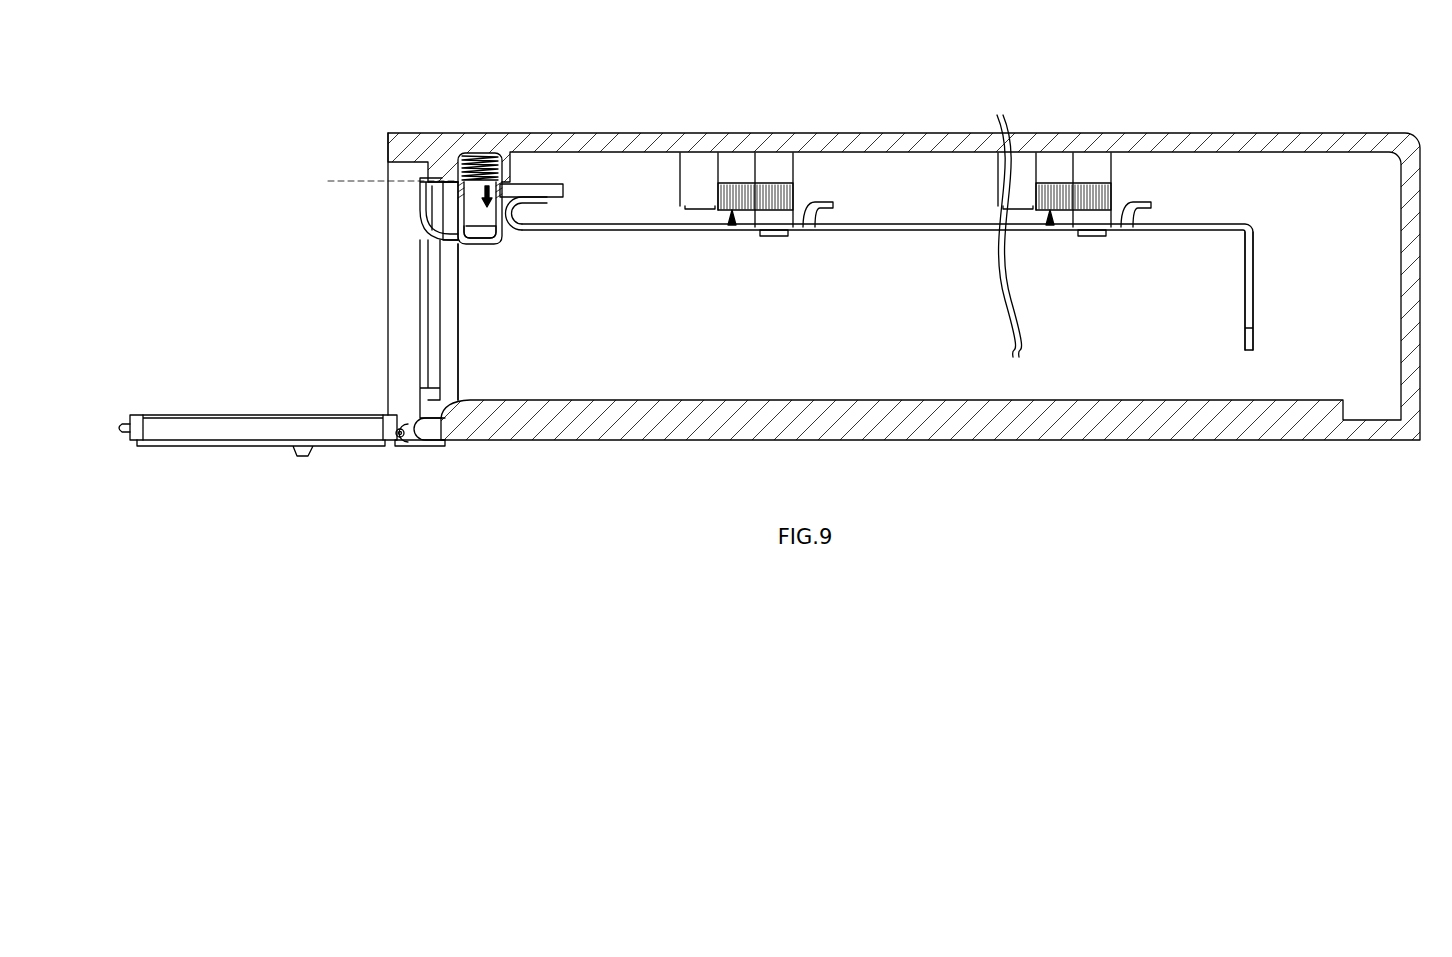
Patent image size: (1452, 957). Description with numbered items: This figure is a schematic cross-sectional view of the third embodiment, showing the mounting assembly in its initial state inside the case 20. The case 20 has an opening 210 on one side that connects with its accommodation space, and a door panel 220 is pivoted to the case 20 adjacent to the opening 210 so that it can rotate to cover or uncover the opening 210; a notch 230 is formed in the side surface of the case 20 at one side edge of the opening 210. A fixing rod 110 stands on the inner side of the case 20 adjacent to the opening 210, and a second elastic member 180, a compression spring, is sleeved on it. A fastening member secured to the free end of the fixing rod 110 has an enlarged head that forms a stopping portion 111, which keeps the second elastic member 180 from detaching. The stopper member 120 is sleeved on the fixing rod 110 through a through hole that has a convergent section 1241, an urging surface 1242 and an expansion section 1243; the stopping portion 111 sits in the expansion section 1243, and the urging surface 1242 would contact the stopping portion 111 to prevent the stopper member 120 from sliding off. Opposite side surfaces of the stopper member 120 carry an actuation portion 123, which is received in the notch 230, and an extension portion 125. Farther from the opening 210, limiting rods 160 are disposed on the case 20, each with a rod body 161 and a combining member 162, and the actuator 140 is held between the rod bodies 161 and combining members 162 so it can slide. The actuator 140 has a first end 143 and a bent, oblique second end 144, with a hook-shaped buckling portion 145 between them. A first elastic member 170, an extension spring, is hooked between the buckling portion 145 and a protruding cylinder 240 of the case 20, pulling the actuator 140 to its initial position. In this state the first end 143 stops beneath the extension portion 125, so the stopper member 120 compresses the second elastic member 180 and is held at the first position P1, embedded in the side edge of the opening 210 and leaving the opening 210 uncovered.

The case 20 is at (925, 128).
The fixing rod 110 is at (487, 184).
The stopping portion 111 is at (468, 246).
The stopper member 120 is at (390, 211).
The actuation portion 123 is at (428, 196).
The extension portion 125 is at (562, 190).
The convergent section 1241 is at (450, 184).
The urging surface 1242 is at (497, 200).
The expansion section 1243 is at (480, 243).
The actuator 140 is at (913, 255).
The first end 143 is at (546, 217).
The second end 144 is at (1258, 305).
The buckling portion 145 is at (822, 230).
The limiting rod 160 is at (953, 190).
The rod body 161 is at (798, 178).
The combining member 162 is at (773, 237).
The first elastic member 170 is at (732, 228).
The second elastic member 180 is at (480, 155).
The opening 210 is at (425, 322).
The door panel 220 is at (207, 432).
The notch 230 is at (405, 243).
The protruding cylinder 240 is at (700, 165).
The first position P1 is at (376, 181).